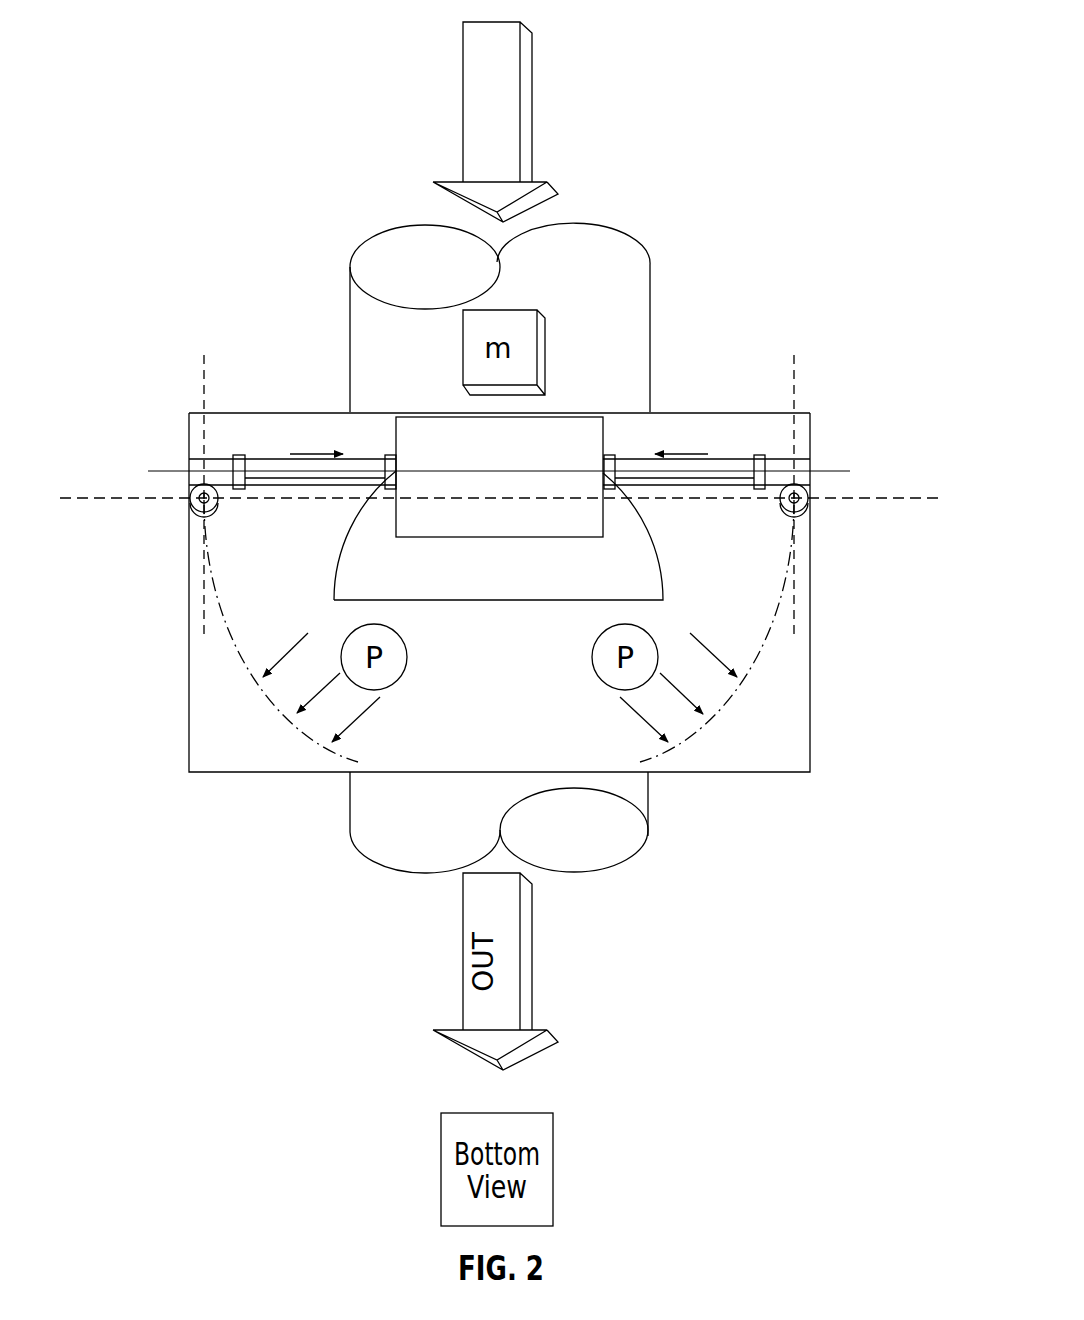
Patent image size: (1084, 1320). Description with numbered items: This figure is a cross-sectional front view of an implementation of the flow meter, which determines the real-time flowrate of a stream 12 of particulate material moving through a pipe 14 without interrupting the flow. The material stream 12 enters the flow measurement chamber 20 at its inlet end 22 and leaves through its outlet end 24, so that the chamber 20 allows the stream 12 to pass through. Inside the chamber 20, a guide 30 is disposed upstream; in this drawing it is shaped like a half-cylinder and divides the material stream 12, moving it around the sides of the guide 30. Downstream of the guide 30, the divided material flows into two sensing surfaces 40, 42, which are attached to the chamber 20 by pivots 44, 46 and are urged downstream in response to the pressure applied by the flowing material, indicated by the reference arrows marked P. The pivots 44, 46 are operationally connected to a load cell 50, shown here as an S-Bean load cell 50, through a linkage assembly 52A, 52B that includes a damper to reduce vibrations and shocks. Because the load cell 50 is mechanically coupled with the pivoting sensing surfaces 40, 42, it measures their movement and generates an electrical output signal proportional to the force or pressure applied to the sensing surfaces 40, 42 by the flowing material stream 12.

The material stream 12 is at (532, 108).
The pipe 14 is at (650, 304).
The flow measurement chamber 20 is at (810, 455).
The inlet end 22 is at (630, 412).
The outlet end 24 is at (370, 773).
The guide 30 is at (645, 567).
The sensing surface 40 is at (263, 677).
The sensing surface 42 is at (733, 680).
The pivot 44 is at (198, 512).
The pivot 46 is at (803, 512).
The load cell 50 is at (425, 438).
The linkage assembly 52A is at (278, 460).
The linkage assembly 52B is at (720, 460).